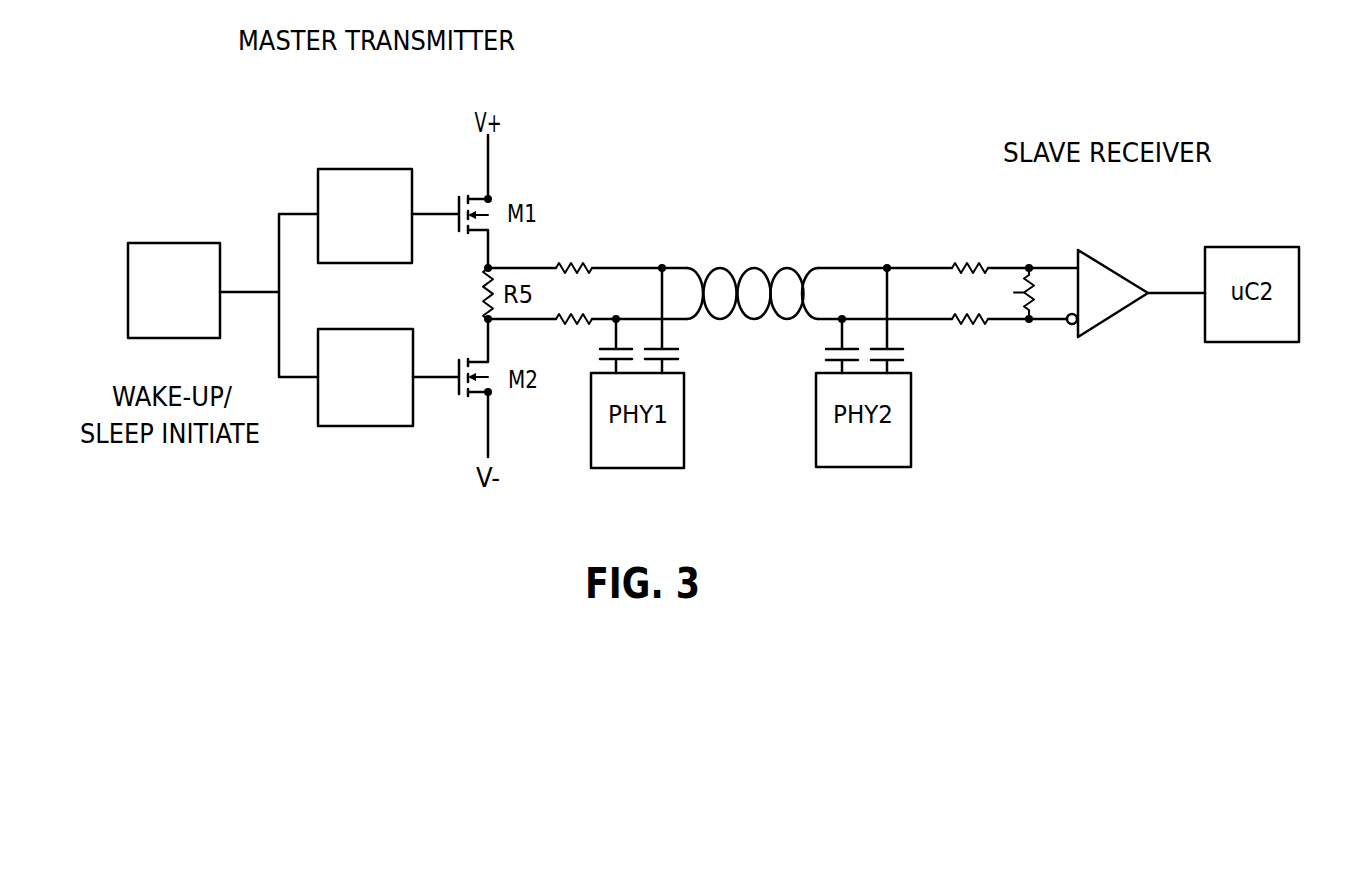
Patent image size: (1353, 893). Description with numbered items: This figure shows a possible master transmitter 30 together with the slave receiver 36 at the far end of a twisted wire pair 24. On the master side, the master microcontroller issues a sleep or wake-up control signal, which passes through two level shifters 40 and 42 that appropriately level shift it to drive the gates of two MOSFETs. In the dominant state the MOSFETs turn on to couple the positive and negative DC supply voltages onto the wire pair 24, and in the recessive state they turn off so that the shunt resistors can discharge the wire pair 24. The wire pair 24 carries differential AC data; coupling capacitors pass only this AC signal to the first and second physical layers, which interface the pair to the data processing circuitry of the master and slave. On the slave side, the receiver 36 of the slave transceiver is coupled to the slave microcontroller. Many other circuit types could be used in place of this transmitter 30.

The transmitter 30 is at (243, 215).
The level shifter 40 is at (326, 165).
The level shifter 42 is at (388, 428).
The twisted wire pair 24 is at (755, 262).
The receiver 36 is at (1099, 262).